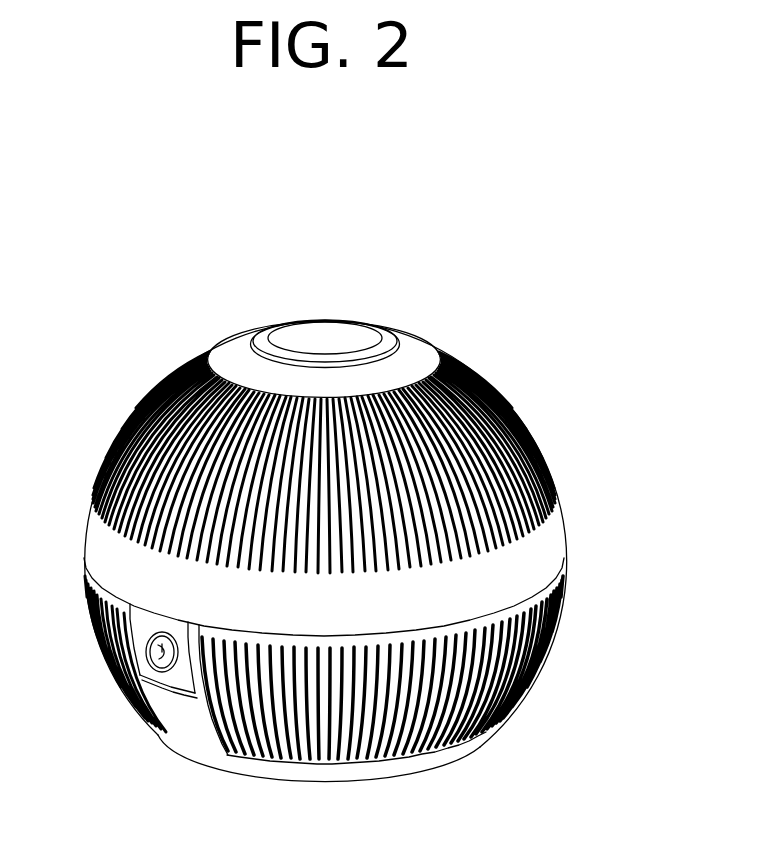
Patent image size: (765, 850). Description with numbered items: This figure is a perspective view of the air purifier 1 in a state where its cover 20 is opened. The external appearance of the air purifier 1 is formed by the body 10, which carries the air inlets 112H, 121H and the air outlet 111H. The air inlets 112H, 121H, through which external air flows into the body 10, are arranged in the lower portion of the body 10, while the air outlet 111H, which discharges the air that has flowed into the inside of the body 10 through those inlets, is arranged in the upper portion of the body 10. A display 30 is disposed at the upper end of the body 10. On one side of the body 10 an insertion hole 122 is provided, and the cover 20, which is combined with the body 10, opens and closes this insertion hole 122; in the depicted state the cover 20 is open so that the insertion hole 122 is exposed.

The air purifier 1 is at (312, 189).
The body 10 is at (566, 531).
The cover 20 is at (180, 741).
The display 30 is at (318, 314).
The air outlet 111H is at (496, 443).
The air inlet 112H is at (504, 688).
The air inlet 121H is at (254, 731).
The insertion hole 122 is at (145, 650).